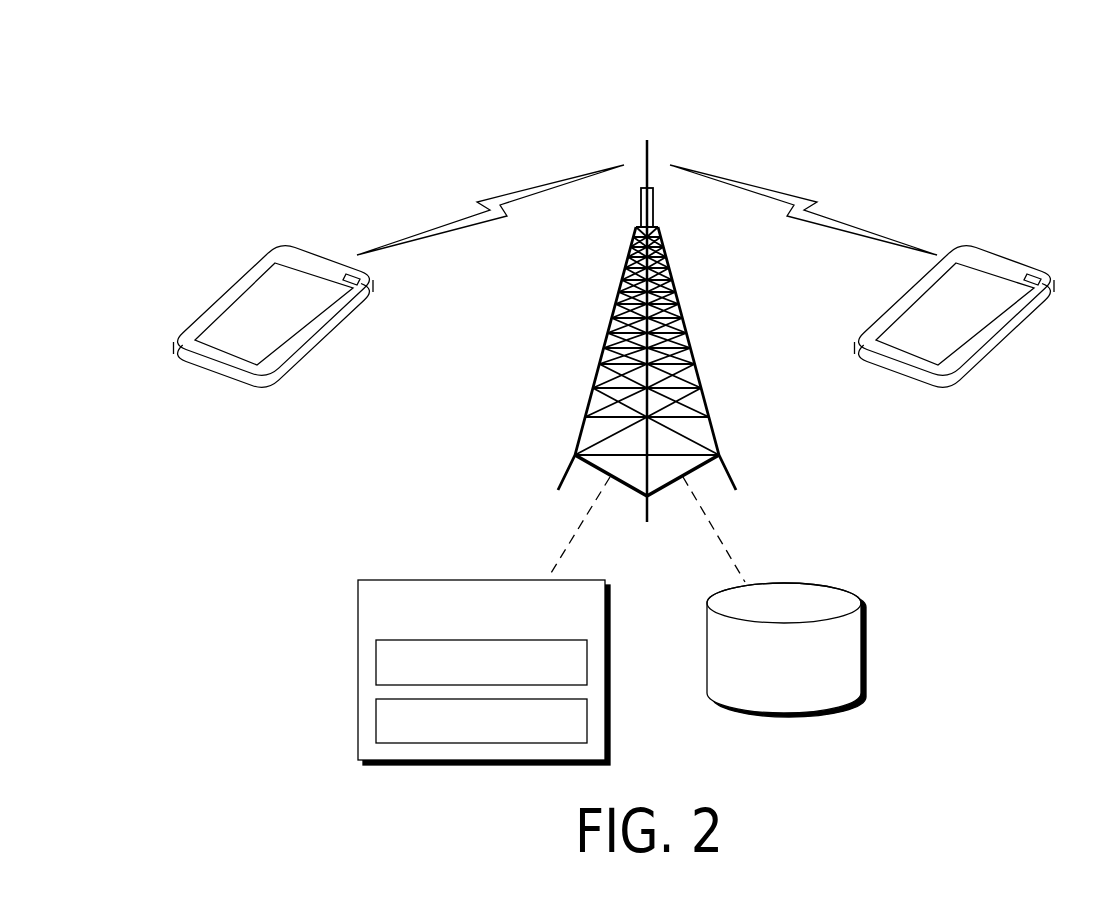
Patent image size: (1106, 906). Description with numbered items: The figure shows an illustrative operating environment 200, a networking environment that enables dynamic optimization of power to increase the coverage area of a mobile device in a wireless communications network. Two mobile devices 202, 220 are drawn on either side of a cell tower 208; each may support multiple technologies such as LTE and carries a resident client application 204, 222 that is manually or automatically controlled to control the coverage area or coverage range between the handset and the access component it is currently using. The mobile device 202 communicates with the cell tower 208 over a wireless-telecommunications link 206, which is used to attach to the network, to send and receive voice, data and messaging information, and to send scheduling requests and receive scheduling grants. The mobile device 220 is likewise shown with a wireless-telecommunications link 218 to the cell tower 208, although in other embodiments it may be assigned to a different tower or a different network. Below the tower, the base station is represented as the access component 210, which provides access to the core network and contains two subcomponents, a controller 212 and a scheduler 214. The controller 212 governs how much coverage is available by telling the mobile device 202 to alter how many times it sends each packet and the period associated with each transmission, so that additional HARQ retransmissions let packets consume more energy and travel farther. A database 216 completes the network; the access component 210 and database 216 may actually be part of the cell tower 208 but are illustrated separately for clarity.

The operating environment 200 is at (88, 93).
The mobile device 202 is at (238, 293).
The client application 204 is at (370, 299).
The wireless-telecommunications link 206 is at (508, 191).
The cell tower 208 is at (603, 352).
The access component 210 is at (398, 579).
The controller 212 is at (376, 660).
The scheduler 214 is at (376, 718).
The database 216 is at (825, 583).
The wireless-telecommunications link 218 is at (783, 190).
The mobile device 220 is at (918, 293).
The client application 222 is at (1051, 299).